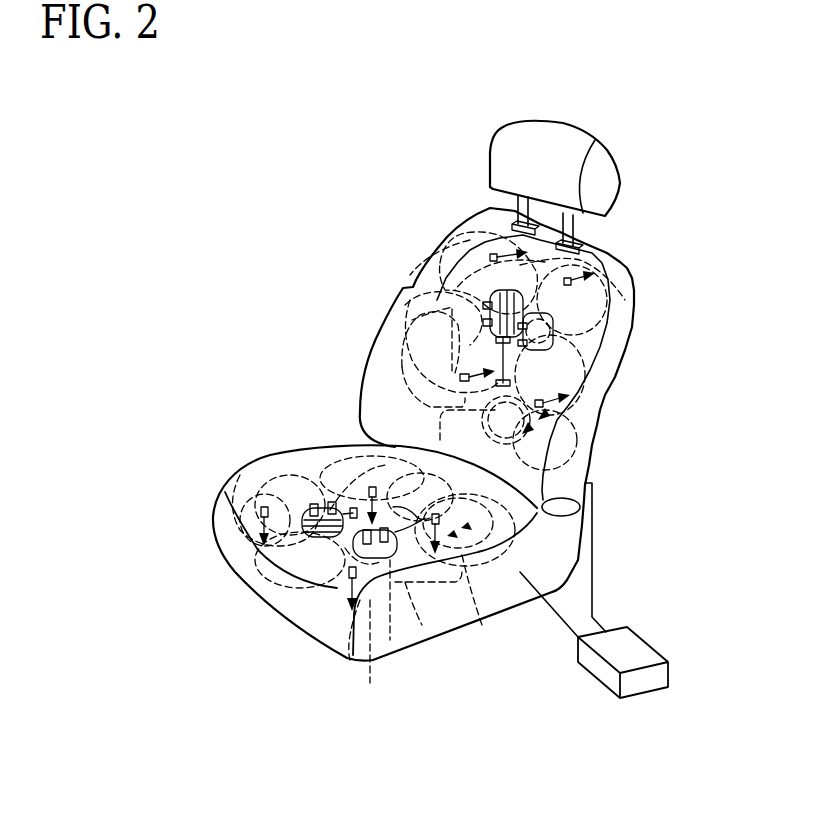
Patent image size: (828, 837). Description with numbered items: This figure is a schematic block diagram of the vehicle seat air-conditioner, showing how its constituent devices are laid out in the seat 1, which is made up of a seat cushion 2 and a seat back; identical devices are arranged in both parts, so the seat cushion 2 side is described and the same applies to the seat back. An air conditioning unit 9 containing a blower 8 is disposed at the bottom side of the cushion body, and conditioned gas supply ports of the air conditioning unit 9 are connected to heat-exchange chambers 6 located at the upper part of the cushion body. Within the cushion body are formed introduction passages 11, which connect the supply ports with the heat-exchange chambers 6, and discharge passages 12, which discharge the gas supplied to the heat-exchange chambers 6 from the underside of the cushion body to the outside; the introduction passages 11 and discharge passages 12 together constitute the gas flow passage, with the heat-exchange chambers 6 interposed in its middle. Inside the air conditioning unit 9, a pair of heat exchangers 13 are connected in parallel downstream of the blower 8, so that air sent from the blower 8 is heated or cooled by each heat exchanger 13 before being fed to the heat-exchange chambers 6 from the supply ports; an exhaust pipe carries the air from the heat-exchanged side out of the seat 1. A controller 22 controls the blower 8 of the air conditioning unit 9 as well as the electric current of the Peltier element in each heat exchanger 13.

The seat 1 is at (642, 271).
The seat cushion 2 is at (240, 467).
The heat-exchange chamber 6 is at (633, 295).
The blower 8 is at (460, 428).
The air conditioning unit 9 is at (550, 433).
The introduction passage 11 is at (430, 267).
The discharge passage 12 is at (460, 233).
The heat exchanger 13 is at (542, 262).
The controller 22 is at (635, 650).